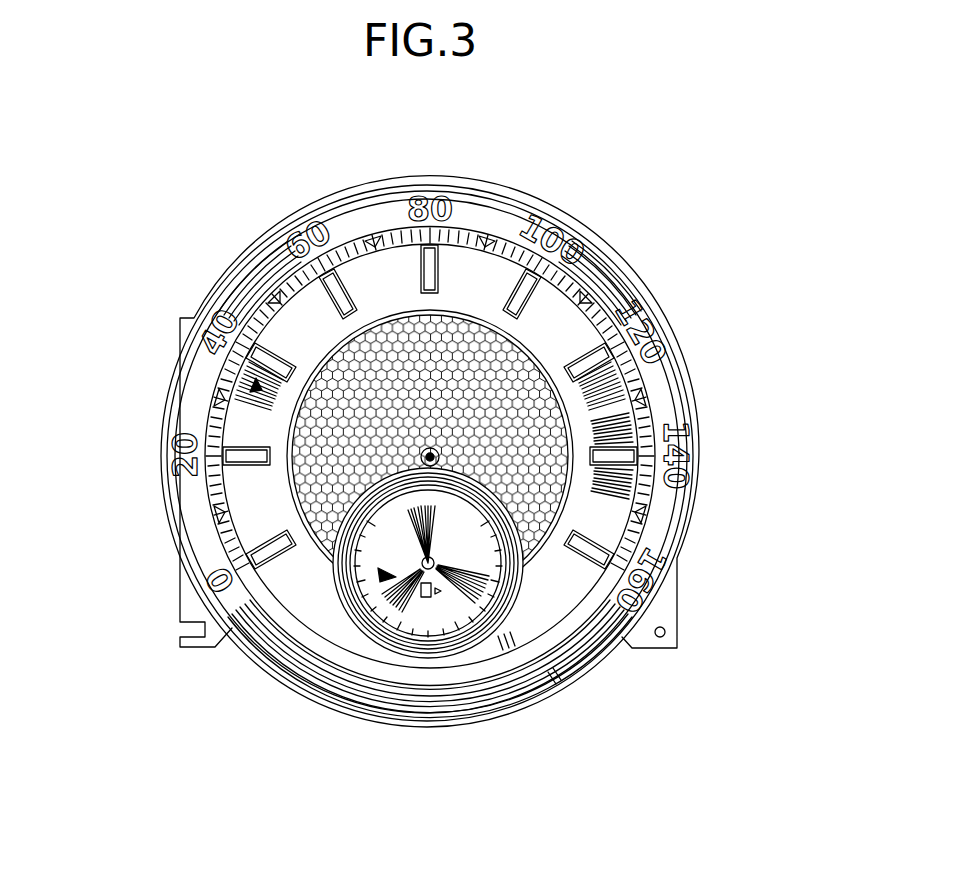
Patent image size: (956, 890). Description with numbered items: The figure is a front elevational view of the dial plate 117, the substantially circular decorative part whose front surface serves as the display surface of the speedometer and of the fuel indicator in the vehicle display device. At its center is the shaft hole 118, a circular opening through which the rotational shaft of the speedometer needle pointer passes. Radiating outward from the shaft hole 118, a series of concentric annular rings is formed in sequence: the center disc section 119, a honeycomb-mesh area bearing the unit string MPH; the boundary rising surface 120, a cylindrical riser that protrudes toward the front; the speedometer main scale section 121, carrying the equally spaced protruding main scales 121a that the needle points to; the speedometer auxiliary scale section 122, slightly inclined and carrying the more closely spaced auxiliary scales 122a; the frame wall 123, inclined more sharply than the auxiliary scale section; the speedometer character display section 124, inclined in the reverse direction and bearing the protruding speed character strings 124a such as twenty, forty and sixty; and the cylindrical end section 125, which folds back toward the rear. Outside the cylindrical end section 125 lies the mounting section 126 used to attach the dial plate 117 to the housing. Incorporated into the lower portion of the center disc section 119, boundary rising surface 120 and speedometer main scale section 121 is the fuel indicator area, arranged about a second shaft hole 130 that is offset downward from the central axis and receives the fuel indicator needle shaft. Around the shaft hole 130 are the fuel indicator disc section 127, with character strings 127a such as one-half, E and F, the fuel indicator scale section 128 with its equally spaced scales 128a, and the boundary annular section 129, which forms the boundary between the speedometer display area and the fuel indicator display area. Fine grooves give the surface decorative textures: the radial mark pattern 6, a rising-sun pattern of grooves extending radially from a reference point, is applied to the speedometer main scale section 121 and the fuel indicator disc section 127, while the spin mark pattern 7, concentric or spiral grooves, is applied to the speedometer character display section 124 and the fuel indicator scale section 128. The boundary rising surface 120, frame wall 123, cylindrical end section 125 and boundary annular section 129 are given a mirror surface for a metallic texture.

The dial plate 117 is at (469, 358).
The shaft hole 118 is at (421, 454).
The center disc section 119 is at (312, 506).
The boundary rising surface 120 is at (287, 567).
The speedometer main scale section 121 is at (284, 588).
The main scales 121a is at (447, 262).
The speedometer auxiliary scale section 122 is at (292, 624).
The auxiliary scales 122a is at (397, 243).
The frame wall 123 is at (322, 662).
The speedometer character display section 124 is at (345, 689).
The character strings 124a is at (553, 233).
The cylindrical end section 125 is at (333, 708).
The mounting section 126 is at (668, 323).
The fuel indicator disc section 127 is at (444, 652).
The character strings 127a is at (414, 638).
The fuel indicator scale section 128 is at (465, 655).
The scales 128a is at (386, 640).
The boundary annular section 129 is at (478, 648).
The shaft hole 130 is at (478, 572).
The radial mark pattern 6 is at (254, 385).
The spin mark pattern 7 is at (505, 640).